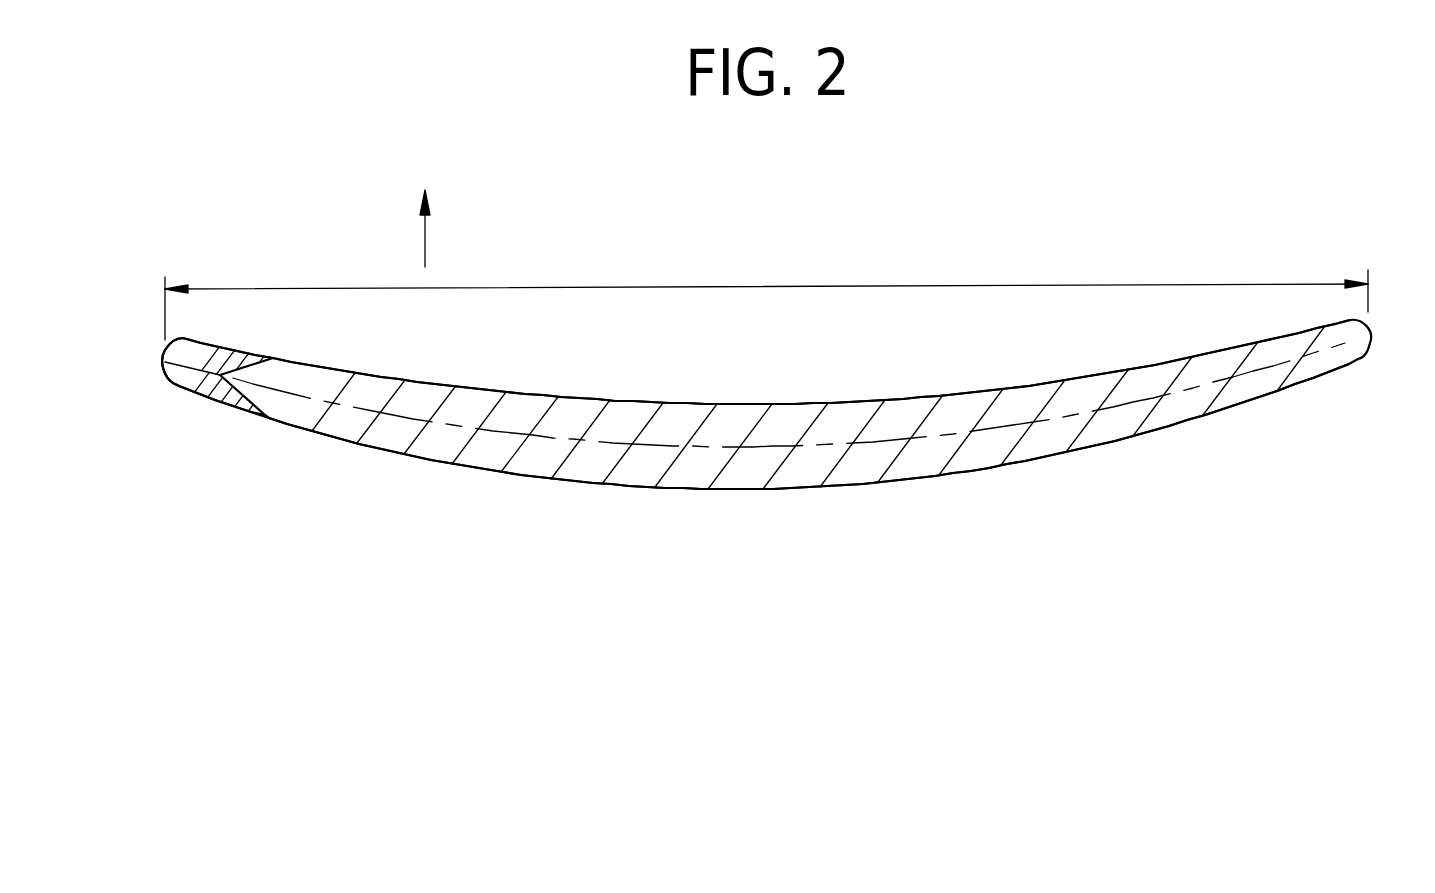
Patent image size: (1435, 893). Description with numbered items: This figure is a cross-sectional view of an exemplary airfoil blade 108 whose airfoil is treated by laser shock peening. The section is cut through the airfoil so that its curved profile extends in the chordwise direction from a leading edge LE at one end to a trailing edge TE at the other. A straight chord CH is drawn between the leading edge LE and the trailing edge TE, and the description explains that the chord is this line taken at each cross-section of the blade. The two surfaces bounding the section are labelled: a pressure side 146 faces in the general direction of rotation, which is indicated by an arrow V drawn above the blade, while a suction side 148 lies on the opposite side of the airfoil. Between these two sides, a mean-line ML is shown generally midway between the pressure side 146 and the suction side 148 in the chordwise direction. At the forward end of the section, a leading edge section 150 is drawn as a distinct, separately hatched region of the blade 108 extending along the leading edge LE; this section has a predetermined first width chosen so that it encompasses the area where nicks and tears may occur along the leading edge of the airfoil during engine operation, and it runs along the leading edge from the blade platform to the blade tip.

The airfoil blade 108 is at (890, 388).
The pressure side 146 is at (634, 401).
The suction side 148 is at (422, 458).
The leading edge section 150 is at (165, 378).
The leading edge LE is at (165, 360).
The trailing edge TE is at (1370, 335).
The chord CH is at (542, 288).
The mean-line ML is at (770, 447).
The arrow indicating direction of rotation V is at (425, 232).